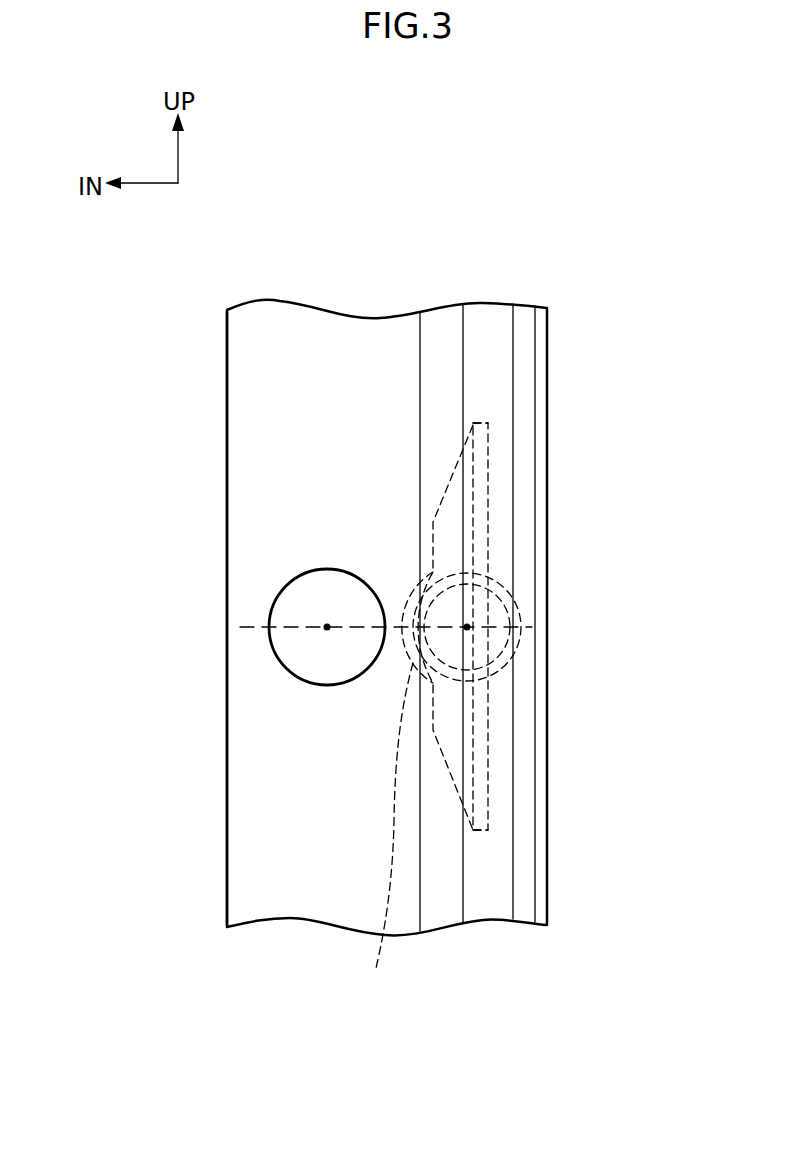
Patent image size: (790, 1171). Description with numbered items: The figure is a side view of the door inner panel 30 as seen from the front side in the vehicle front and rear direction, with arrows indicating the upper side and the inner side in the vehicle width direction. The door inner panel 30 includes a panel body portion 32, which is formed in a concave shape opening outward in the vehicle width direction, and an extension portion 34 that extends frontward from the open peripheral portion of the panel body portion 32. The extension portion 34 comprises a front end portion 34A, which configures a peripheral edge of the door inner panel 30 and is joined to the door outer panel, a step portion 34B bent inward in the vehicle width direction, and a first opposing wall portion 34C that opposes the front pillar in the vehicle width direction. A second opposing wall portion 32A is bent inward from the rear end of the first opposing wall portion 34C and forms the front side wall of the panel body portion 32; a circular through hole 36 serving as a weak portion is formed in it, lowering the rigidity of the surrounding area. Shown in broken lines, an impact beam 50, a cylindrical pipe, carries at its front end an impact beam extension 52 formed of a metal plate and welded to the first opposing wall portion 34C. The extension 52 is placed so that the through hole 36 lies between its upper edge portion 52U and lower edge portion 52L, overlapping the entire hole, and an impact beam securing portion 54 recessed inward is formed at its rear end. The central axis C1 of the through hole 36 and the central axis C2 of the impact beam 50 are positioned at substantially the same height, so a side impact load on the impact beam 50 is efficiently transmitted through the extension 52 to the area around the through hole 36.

The door inner panel 30 is at (143, 338).
The panel body portion 32 is at (216, 460).
The second opposing wall portion 32A is at (265, 527).
The extension portion 34 is at (632, 240).
The front end portion 34A is at (523, 318).
The step portion 34B is at (487, 319).
The first opposing wall portion 34C is at (435, 323).
The through hole 36 is at (297, 674).
The impact beam 50 is at (503, 577).
The impact beam extension 52 is at (487, 506).
The upper edge portion 52U is at (488, 422).
The lower edge portion 52L is at (486, 832).
The impact beam securing portion 54 is at (385, 830).
The central axis of the through hole C1 is at (327, 627).
The central axis of the impact beam C2 is at (470, 636).